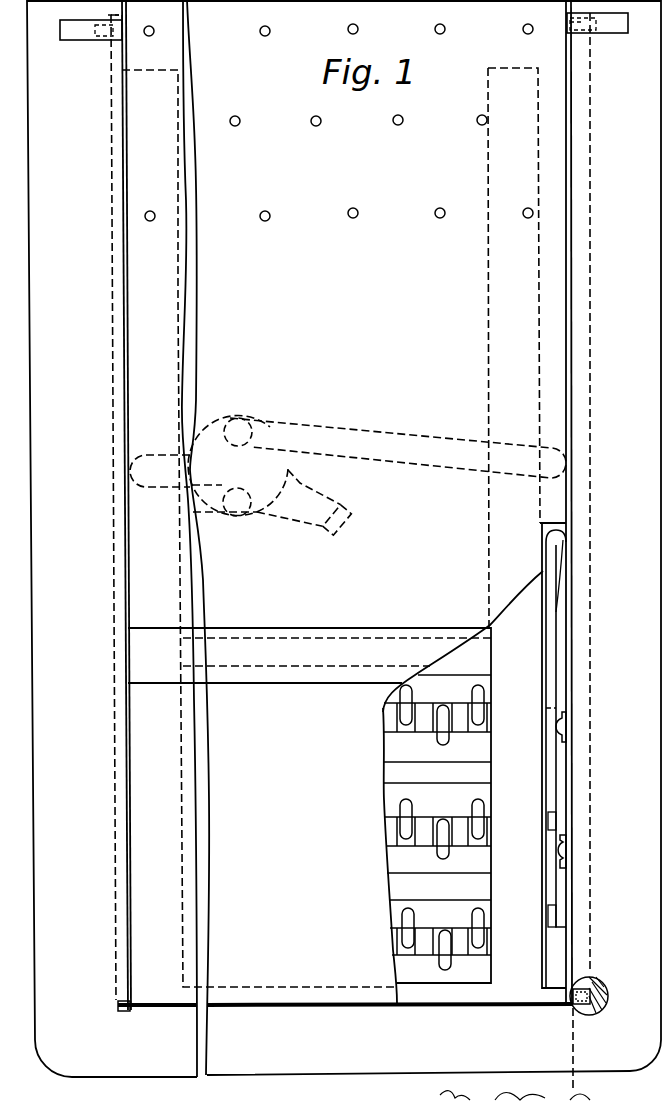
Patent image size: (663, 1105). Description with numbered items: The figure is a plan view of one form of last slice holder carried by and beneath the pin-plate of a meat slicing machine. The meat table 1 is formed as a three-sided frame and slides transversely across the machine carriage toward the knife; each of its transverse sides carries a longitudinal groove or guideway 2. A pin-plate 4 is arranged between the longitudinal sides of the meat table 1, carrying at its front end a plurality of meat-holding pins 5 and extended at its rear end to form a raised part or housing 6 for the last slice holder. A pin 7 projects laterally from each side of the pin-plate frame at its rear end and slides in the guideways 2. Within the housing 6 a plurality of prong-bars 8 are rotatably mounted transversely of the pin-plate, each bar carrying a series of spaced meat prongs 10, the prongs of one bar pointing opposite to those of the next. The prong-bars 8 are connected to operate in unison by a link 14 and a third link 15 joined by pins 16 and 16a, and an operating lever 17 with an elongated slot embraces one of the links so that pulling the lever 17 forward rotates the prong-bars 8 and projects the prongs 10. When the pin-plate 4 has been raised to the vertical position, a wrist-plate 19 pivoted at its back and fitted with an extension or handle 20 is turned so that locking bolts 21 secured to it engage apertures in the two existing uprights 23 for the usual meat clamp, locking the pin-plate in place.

The meat table 1 is at (344, 538).
The longitudinal groove or guideway 2 is at (115, 403).
The pin-plate 4 is at (331, 538).
The meat-holding pins 5 is at (265, 221).
The raised part or housing 6 is at (335, 724).
The pin 7 is at (133, 1000).
The prong-bars 8 is at (390, 740).
The meat prongs 10 is at (372, 942).
The link 14 is at (562, 911).
The third link 15 is at (562, 803).
The pin 16 is at (575, 860).
The pin 16a is at (572, 733).
The operating lever 17 is at (550, 653).
The wrist-plate 19 is at (205, 447).
The extension or handle 20 is at (312, 538).
The locking bolts 21 is at (363, 445).
The uprights 23 is at (75, 40).